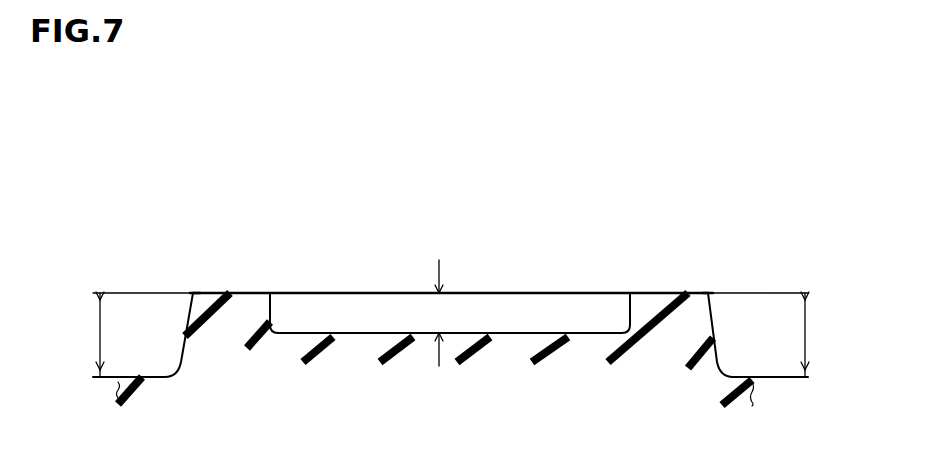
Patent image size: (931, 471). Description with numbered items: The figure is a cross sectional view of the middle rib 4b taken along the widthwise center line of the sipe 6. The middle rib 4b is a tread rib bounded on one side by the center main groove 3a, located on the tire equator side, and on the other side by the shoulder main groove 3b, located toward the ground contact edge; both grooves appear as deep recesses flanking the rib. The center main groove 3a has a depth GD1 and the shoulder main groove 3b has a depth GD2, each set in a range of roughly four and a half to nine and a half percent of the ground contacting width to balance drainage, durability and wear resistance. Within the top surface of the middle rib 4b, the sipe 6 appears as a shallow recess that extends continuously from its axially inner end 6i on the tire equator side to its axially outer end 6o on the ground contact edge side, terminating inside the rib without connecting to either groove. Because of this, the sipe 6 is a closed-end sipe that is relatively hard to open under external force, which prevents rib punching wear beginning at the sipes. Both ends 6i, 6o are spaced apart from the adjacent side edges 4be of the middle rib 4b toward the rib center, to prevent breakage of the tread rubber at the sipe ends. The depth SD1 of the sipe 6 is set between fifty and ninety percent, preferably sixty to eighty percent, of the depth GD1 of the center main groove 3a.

The center main groove 3a is at (750, 325).
The shoulder main groove 3b is at (142, 323).
The middle rib 4b is at (245, 265).
The side edge of the middle rib 4be is at (193, 293).
The sipe 6 is at (366, 325).
The axially outer end of the sipe 6o is at (280, 297).
The axially inner end of the sipe 6i is at (620, 298).
The depth of the center main groove GD1 is at (801, 335).
The depth of the shoulder main groove GD2 is at (97, 335).
The depth of the sipe SD1 is at (436, 313).